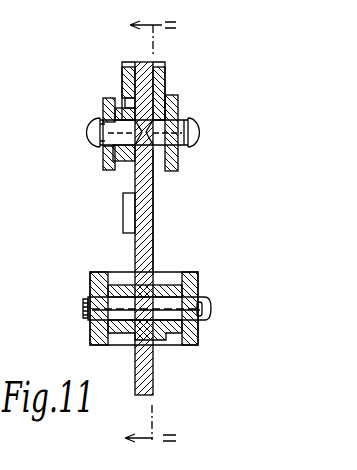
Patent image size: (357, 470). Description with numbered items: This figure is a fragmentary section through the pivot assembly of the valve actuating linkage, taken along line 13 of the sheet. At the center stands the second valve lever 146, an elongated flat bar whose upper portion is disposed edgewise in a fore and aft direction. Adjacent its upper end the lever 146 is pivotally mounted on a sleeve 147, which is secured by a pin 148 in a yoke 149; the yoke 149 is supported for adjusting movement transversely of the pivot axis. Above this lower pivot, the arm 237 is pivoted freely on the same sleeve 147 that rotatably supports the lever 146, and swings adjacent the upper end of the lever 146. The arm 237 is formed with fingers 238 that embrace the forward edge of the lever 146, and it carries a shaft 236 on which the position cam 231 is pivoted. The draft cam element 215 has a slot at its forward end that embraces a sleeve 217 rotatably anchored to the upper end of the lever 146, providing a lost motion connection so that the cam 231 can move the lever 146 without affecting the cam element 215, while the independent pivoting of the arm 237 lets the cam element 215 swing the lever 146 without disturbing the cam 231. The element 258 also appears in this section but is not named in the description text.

The section line 13- 13 is at (165, 235).
The second valve lever 146 is at (148, 243).
The sleeve 147 is at (168, 292).
The pin 148 is at (212, 300).
The yoke 149 is at (194, 345).
The cam element 215 is at (104, 100).
The sleeve 217 is at (103, 156).
The cam 231 is at (180, 97).
The shaft 236 is at (190, 142).
The arm 237 is at (163, 200).
The fingers 238 is at (123, 80).
The stop plate 258 is at (123, 203).